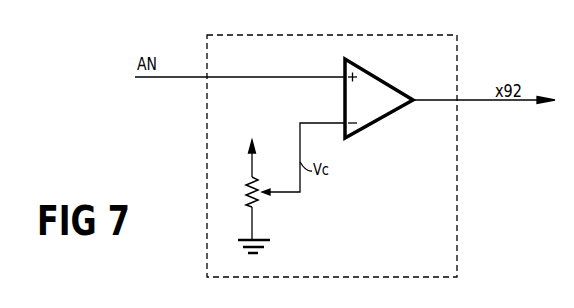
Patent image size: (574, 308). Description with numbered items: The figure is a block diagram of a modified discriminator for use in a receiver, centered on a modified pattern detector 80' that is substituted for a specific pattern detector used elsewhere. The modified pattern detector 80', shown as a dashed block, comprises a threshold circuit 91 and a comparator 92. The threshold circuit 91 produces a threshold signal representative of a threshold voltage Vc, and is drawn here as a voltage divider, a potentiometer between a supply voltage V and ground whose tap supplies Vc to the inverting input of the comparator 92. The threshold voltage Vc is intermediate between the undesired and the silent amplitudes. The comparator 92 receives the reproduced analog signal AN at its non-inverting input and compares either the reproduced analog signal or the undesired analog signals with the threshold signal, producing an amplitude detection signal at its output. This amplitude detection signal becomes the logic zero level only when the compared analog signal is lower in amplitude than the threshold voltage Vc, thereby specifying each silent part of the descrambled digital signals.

The modified pattern detector 80' is at (350, 156).
The comparator 92 is at (383, 80).
The threshold circuit 91 is at (248, 197).